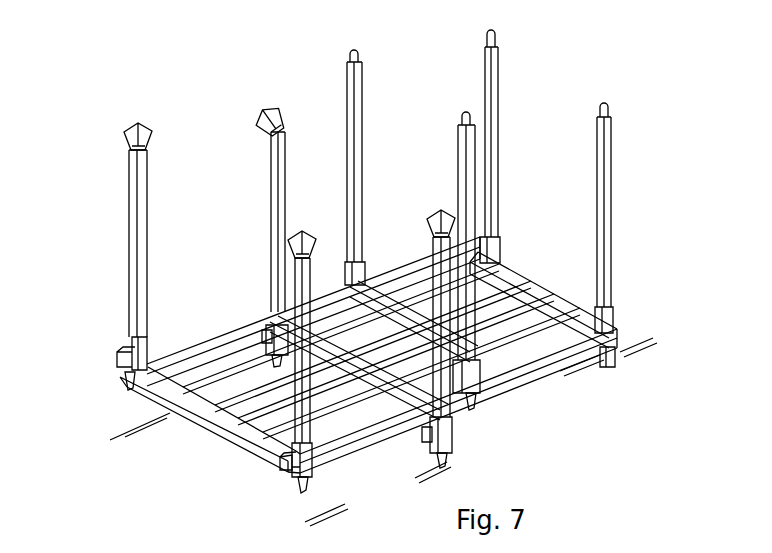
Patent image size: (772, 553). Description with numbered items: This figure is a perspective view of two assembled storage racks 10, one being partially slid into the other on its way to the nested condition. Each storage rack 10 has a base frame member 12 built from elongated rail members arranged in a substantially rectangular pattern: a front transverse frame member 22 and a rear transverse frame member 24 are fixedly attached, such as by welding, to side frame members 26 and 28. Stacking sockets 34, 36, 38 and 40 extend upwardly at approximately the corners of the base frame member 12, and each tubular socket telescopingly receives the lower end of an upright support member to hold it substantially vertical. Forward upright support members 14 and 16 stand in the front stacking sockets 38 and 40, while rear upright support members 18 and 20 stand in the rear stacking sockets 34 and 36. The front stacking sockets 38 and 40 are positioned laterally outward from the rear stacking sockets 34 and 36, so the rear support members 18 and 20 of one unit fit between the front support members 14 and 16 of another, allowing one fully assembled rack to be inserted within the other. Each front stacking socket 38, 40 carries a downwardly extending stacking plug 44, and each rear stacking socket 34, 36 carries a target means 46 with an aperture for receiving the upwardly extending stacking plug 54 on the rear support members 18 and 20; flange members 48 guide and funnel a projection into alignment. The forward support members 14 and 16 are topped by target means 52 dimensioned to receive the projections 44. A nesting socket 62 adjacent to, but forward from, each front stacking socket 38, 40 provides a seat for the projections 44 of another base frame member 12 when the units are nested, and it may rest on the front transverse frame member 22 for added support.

The storage rack device 10 is at (114, 247).
The base frame member 12 is at (242, 450).
The forward upright support member 14 is at (131, 178).
The forward upright support member 16 is at (436, 250).
The rear upright support member 18 is at (361, 98).
The rear upright support member 20 is at (476, 170).
The front transverse frame member 22 is at (188, 412).
The rear transverse frame member 24 is at (528, 300).
The side frame member 26 is at (213, 344).
The side frame member 28 is at (374, 430).
The rear stacking socket 34 is at (500, 251).
The rear stacking socket 36 is at (625, 318).
The front stacking socket 38 is at (148, 357).
The front stacking socket 40 is at (320, 466).
The stacking plug 44 is at (300, 492).
The target means 46 is at (620, 363).
The flange member 48 is at (502, 388).
The target means 52 is at (131, 124).
The stacking plug 54 is at (496, 36).
The nesting socket 62 is at (284, 468).